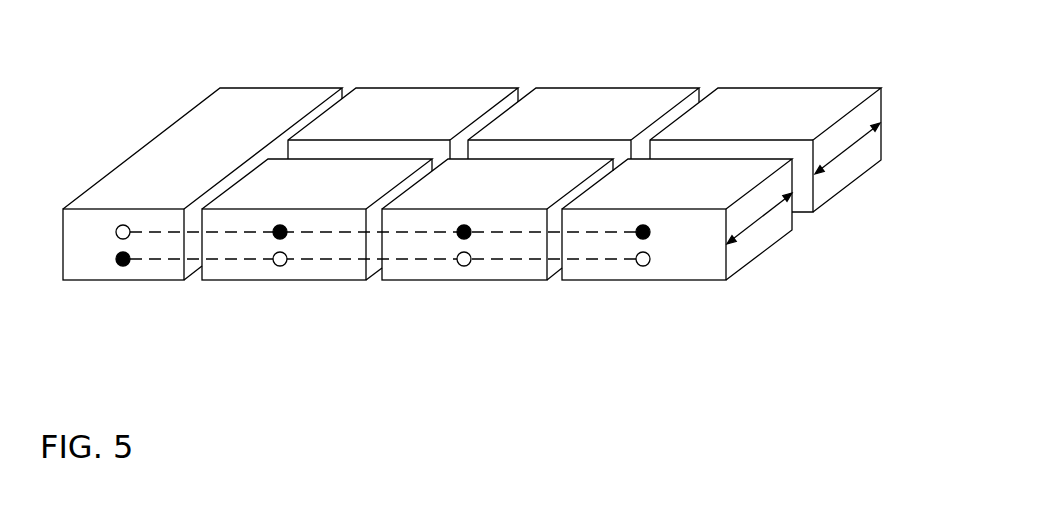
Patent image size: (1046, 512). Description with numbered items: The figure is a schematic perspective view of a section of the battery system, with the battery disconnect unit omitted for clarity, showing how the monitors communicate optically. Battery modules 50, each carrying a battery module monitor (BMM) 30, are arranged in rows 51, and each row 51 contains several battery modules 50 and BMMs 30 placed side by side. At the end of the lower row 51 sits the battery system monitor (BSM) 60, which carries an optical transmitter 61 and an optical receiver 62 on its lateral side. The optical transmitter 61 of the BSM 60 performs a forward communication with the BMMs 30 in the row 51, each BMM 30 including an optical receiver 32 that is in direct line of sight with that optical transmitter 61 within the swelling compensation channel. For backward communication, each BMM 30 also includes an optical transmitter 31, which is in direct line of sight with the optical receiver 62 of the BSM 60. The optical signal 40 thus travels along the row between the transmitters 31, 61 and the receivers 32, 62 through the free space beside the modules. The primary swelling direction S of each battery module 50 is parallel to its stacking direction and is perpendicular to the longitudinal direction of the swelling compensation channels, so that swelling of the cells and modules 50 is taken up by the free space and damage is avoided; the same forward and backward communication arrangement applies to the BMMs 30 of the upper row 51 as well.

The battery module monitor (BMM) 30 is at (297, 193).
The optical transmitter of BMM 31 is at (280, 225).
The optical receiver of BMM 32 is at (280, 267).
The optical signal 40 is at (438, 259).
The battery module 50 is at (300, 88).
The row of battery modules 51 is at (774, 229).
The battery system monitor (BSM) 60 is at (191, 160).
The optical transmitter of BSM 61 is at (123, 267).
The optical receiver of BSM 62 is at (116, 232).
The primary swelling direction S is at (745, 235).